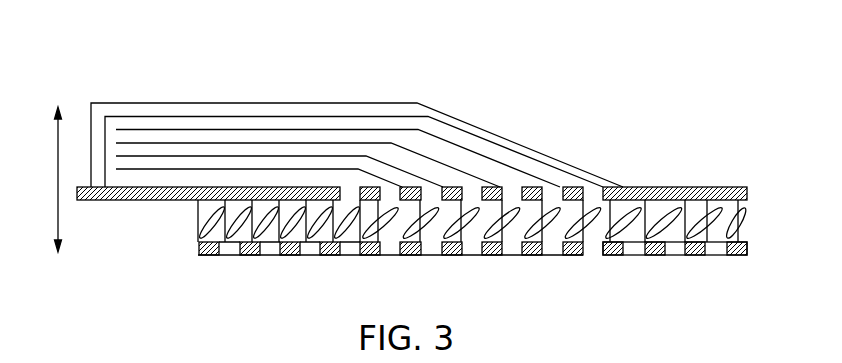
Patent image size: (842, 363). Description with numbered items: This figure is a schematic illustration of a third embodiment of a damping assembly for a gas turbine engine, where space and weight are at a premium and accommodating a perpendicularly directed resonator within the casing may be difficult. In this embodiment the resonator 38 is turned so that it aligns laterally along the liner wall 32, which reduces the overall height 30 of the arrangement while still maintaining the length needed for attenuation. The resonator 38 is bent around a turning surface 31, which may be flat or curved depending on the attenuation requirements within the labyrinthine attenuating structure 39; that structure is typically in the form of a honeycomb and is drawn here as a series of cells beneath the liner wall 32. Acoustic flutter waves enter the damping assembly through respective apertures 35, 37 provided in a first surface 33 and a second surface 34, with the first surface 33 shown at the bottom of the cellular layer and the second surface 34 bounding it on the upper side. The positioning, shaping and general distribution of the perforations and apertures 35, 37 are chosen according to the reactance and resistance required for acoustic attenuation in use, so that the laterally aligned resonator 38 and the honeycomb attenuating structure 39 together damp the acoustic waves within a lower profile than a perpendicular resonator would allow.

The height 30 is at (40, 179).
The turning surface 31 is at (470, 130).
The liner wall 32 is at (760, 187).
The first surface 33 is at (733, 256).
The second surface 34 is at (710, 186).
The apertures 35 is at (555, 248).
The apertures 37 is at (557, 183).
The resonator 38 is at (287, 108).
The labyrinthine attenuating structure 39 is at (208, 136).